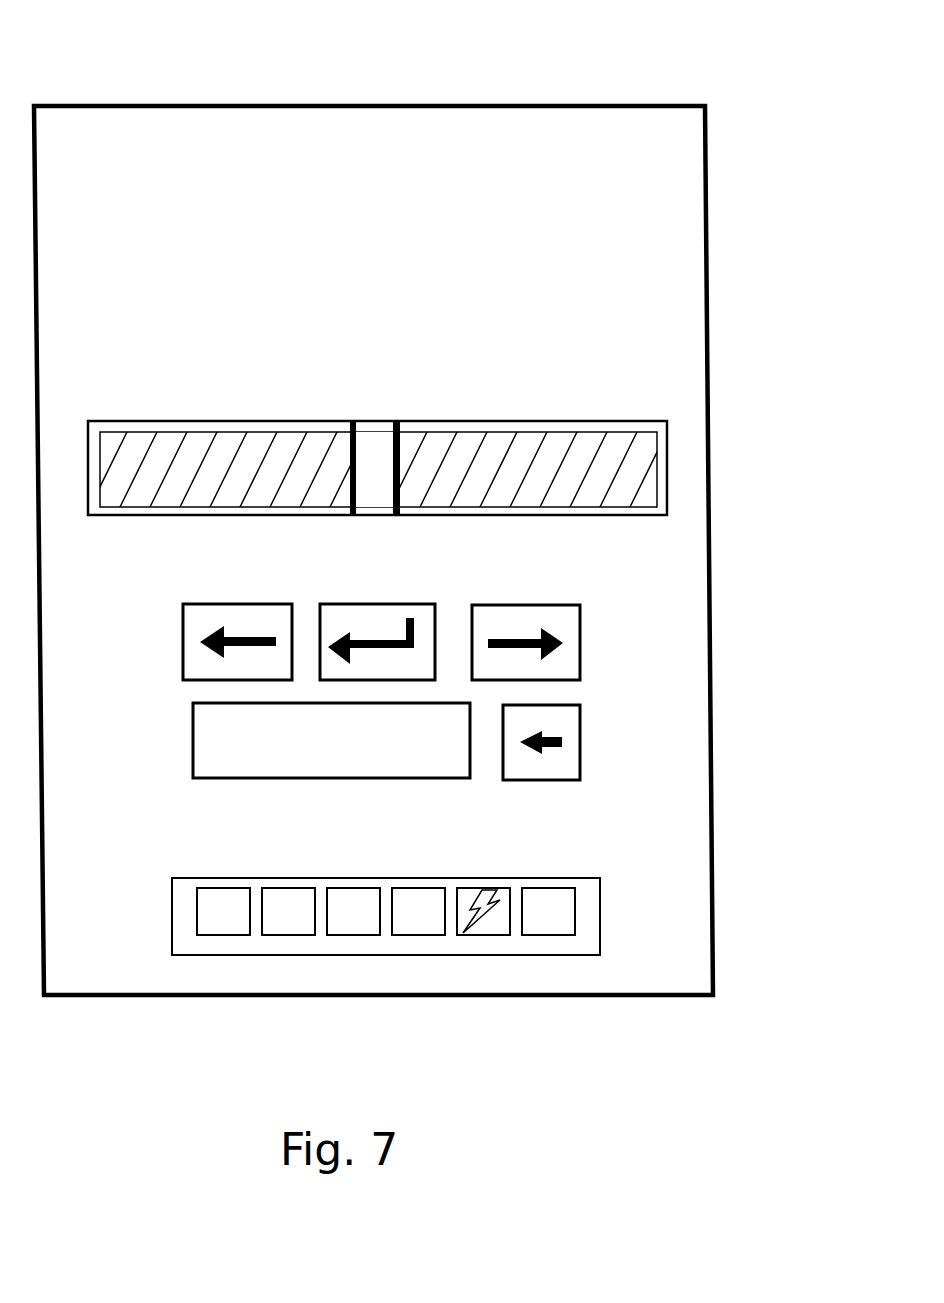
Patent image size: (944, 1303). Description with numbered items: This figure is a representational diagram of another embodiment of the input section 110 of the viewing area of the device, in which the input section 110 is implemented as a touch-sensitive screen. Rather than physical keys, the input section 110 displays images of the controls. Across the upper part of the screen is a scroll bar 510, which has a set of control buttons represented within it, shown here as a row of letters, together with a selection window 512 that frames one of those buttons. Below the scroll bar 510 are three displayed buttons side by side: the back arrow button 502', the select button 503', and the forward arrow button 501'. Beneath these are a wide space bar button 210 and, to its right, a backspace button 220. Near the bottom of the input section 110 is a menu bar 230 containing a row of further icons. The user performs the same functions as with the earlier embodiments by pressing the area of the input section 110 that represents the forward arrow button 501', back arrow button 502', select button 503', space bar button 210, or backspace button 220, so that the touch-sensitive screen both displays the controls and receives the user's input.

The input section 110 is at (505, 80).
The scroll bar 510 is at (138, 410).
The selection window 512 is at (343, 408).
The back arrow button 502' is at (237, 606).
The select button 503' is at (377, 606).
The forward arrow button 501' is at (540, 606).
The space bar button 210 is at (330, 797).
The backspace button 220 is at (610, 725).
The menu bar 230 is at (625, 909).